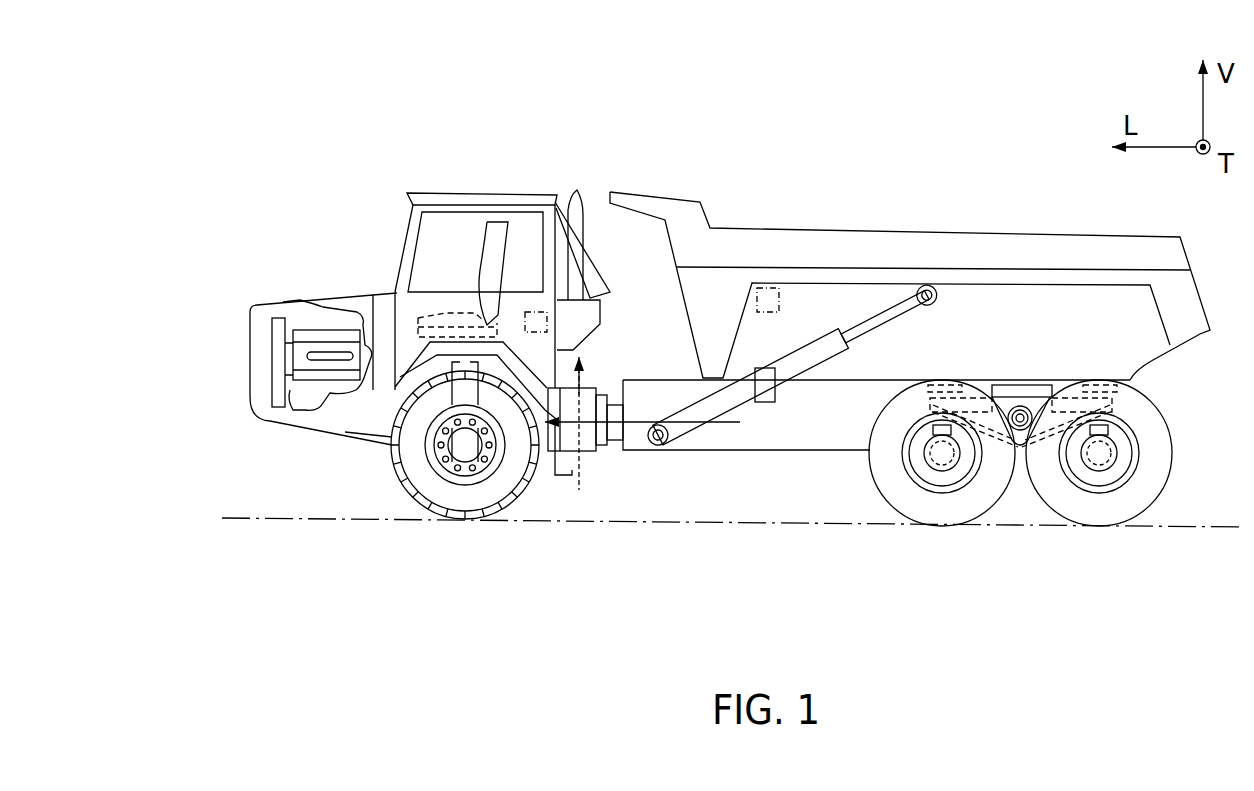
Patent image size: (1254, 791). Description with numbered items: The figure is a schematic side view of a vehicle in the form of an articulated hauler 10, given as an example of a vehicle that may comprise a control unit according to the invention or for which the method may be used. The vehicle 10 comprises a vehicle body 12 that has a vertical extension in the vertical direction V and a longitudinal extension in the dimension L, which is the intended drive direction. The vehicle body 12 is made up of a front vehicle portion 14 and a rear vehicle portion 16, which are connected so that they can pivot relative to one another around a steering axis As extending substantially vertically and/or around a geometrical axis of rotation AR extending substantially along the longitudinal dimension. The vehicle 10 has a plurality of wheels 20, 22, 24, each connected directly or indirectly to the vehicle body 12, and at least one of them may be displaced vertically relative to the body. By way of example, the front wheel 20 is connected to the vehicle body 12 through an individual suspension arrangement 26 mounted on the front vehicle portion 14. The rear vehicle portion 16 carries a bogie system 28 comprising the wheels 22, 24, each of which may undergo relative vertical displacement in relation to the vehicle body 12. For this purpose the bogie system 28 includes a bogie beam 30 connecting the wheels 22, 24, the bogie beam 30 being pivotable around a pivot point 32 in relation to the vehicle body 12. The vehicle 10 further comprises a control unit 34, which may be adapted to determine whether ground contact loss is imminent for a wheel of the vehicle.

The articulated hauler 10 is at (940, 148).
The vehicle body 12 is at (805, 428).
The front vehicle portion 14 is at (302, 467).
The rear vehicle portion 16 is at (707, 473).
The wheel 20 is at (413, 471).
The wheel 22 is at (907, 503).
The wheel 24 is at (1135, 505).
The individual suspension arrangement 26 is at (522, 445).
The bogie system 28 is at (1177, 617).
The bogie beam 30 is at (1037, 413).
The pivot point 32 is at (1003, 410).
The control unit 34 is at (557, 312).